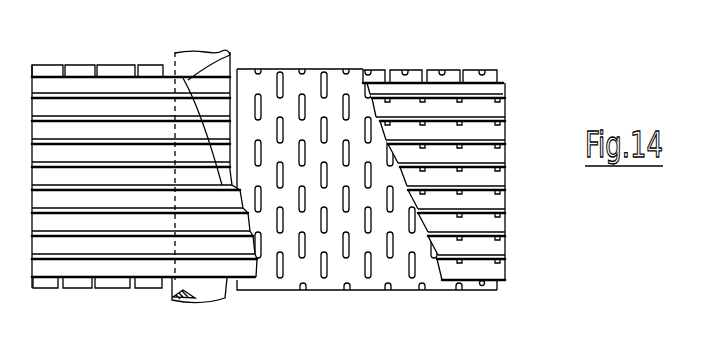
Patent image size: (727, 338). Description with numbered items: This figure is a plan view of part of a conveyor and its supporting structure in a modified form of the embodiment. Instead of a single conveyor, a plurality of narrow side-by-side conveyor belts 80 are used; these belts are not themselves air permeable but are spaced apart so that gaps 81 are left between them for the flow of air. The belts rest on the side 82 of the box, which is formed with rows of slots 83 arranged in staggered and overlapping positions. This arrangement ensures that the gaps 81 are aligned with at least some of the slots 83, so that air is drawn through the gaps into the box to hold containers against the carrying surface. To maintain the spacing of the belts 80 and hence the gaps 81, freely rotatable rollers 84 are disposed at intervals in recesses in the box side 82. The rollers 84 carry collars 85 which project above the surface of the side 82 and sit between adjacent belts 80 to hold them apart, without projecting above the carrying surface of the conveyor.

The conveyor belts 80 is at (449, 137).
The gaps 81 is at (505, 148).
The side of the box 82 is at (316, 78).
The slots 83 is at (360, 295).
The rollers 84 is at (173, 297).
The collars 85 is at (225, 96).